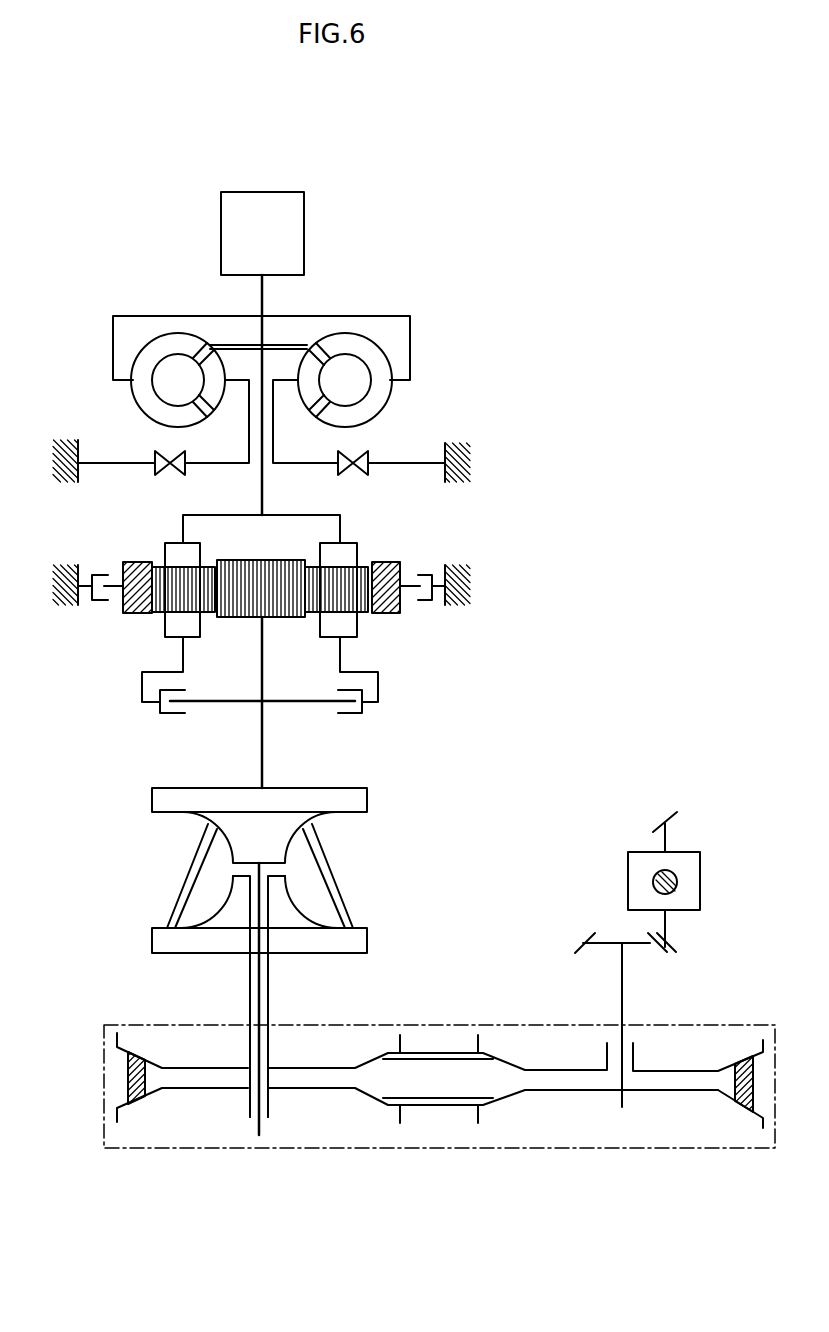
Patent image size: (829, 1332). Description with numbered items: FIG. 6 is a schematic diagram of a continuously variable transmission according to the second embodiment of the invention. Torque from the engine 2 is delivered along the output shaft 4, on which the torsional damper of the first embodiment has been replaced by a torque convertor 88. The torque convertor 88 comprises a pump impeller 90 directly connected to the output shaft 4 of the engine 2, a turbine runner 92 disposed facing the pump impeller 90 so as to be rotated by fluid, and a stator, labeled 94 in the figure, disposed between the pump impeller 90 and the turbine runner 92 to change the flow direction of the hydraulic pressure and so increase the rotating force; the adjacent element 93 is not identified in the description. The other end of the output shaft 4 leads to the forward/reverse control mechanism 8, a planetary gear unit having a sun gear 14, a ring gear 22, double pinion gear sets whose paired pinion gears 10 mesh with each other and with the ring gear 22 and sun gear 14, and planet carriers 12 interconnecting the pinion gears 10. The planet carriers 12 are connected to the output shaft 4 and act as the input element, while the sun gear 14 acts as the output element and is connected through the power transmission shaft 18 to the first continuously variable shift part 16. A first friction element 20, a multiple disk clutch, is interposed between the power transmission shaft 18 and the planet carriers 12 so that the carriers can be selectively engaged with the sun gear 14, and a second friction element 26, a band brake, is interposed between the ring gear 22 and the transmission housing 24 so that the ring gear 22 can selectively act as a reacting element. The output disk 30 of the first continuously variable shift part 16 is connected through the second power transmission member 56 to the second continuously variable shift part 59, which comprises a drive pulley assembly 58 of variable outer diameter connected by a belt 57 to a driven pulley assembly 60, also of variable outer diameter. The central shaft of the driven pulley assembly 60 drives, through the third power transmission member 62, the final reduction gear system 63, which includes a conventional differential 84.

The engine 2 is at (262, 192).
The output shaft 4 is at (265, 298).
The torque convertor 88 is at (289, 378).
The pump impeller 90 is at (380, 405).
The turbine runner 92 is at (368, 354).
The stator 94 is at (303, 362).
The control valve 93 is at (367, 467).
The forward/reverse control mechanism 8 is at (235, 625).
The pinion gears 10 is at (163, 602).
The planet carriers 12 is at (202, 630).
The sun gear 14 is at (258, 563).
The first friction element 20 is at (158, 707).
The ring gear 22 is at (136, 562).
The transmission housing 24 is at (53, 585).
The second friction element 26 is at (96, 575).
The power transmission shaft 18 is at (265, 747).
The first continuously variable shift part 16 is at (247, 961).
The output disk 30 is at (367, 941).
The second power transmission member 56 is at (268, 1001).
The final reduction gear system 63 is at (689, 942).
The differential 84 is at (702, 883).
The third power transmission member 62 is at (624, 1003).
The second continuously variable shift part 59 is at (403, 1134).
The belt 57 is at (128, 1071).
The drive pulley assembly 58 is at (208, 1090).
The driven pulley assembly 60 is at (673, 1092).